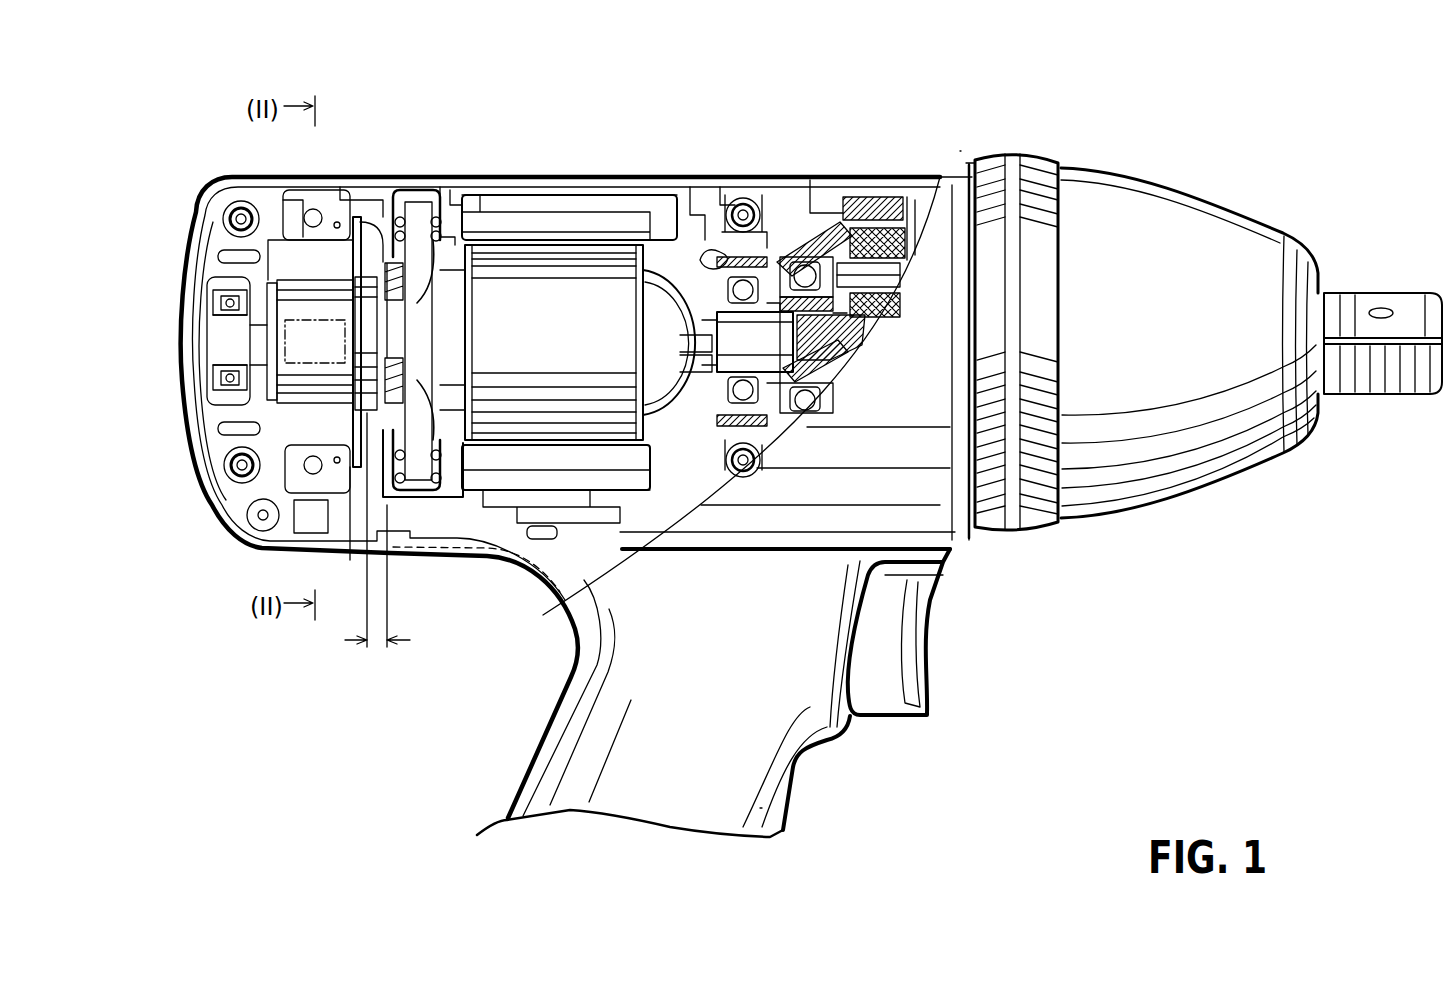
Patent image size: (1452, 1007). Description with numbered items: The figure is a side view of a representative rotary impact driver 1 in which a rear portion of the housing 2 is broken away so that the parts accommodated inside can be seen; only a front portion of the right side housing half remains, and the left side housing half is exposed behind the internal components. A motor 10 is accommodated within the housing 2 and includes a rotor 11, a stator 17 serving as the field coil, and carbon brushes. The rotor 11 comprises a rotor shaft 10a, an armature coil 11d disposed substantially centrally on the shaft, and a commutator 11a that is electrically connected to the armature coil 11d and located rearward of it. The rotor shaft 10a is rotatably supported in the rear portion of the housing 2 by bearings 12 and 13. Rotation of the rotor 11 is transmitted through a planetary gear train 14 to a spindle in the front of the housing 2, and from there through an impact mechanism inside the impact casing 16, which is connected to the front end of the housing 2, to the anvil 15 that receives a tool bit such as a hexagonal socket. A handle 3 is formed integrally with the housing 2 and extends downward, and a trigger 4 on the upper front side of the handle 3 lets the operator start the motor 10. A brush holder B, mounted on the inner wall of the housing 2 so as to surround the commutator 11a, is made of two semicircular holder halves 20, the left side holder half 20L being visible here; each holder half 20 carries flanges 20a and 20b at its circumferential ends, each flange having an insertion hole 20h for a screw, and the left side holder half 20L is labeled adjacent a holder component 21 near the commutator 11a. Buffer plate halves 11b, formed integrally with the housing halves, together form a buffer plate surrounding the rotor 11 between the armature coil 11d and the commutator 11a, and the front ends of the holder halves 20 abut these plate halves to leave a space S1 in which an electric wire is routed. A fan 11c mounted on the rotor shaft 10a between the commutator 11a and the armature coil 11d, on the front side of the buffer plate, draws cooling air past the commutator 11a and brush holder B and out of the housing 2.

The rotary impact driver 1 is at (970, 146).
The housing 2 is at (306, 200).
The handle 3 is at (760, 808).
The trigger 4 is at (905, 682).
The motor 10 is at (522, 155).
The rotor shaft 10a is at (770, 337).
The rotor 11 is at (568, 305).
The commutator 11a is at (297, 393).
The buffer plate half 11b is at (372, 230).
The fan 11c is at (417, 467).
The armature coil 11d is at (497, 280).
The bearing 12 is at (748, 268).
The bearing 13 is at (183, 265).
The planetary gear train 14 is at (882, 262).
The anvil 15 is at (1380, 298).
The impact casing 16 is at (1188, 200).
The stator 17 is at (615, 232).
The positioning portion 20 is at (208, 505).
The left side holder half 20L is at (256, 447).
The flange 20a is at (368, 495).
The flange 20b is at (320, 212).
The insertion hole 20h is at (305, 200).
The motor rear end cap 21 is at (297, 340).
The brush holder B is at (296, 247).
The space S1 is at (377, 661).